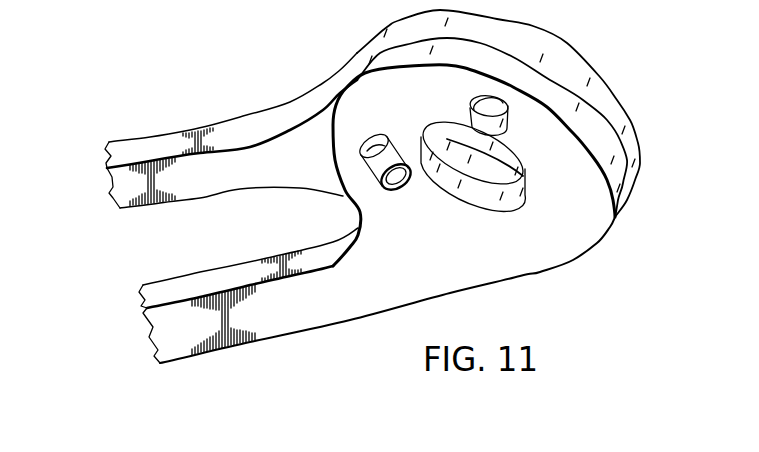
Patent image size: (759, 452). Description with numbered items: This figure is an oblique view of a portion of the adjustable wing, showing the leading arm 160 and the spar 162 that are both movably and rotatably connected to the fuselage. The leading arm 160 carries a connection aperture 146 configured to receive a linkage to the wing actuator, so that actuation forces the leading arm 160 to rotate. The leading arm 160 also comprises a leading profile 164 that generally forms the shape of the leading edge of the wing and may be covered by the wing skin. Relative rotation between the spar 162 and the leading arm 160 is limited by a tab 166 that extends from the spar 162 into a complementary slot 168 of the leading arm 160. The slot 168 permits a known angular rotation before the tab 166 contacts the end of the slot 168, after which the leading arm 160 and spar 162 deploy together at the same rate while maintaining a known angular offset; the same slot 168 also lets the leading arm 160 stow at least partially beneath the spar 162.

The connection aperture 146 is at (470, 103).
The leading arm 160 is at (332, 317).
The spar 162 is at (237, 187).
The leading profile 164 is at (280, 337).
The tab 166 is at (205, 278).
The slot 168 is at (362, 158).